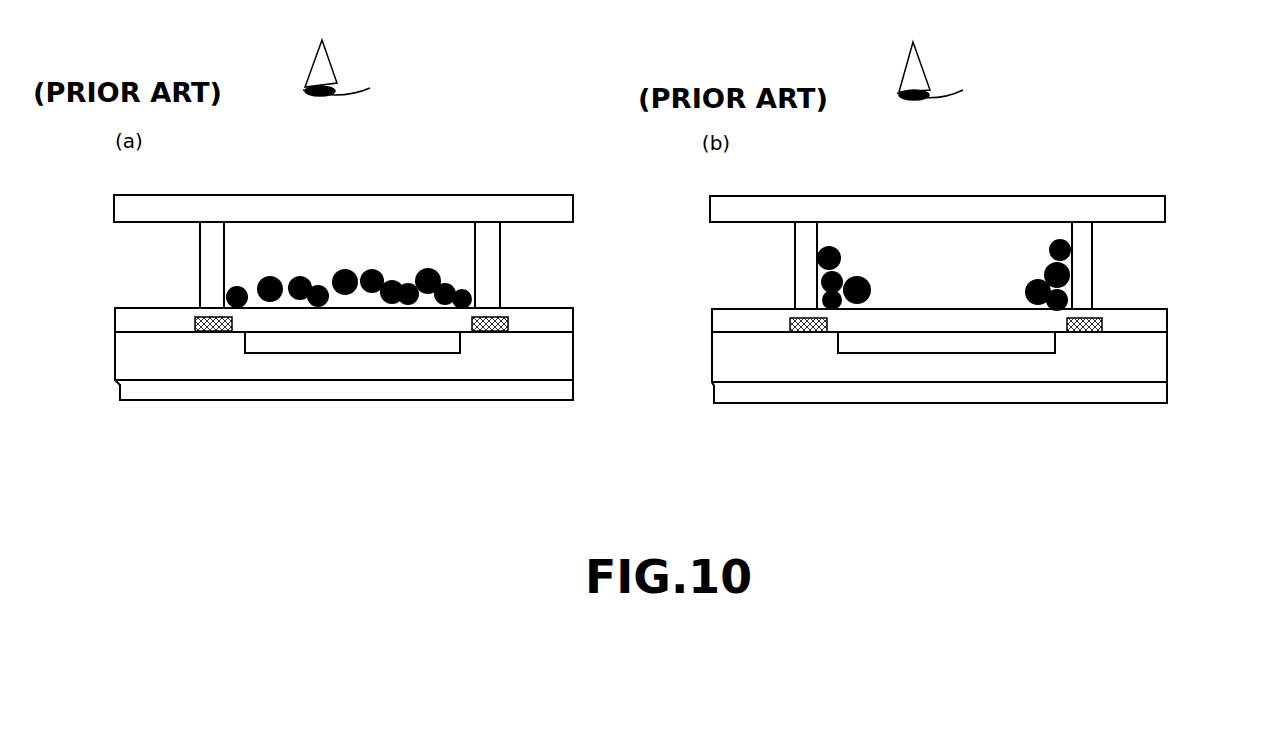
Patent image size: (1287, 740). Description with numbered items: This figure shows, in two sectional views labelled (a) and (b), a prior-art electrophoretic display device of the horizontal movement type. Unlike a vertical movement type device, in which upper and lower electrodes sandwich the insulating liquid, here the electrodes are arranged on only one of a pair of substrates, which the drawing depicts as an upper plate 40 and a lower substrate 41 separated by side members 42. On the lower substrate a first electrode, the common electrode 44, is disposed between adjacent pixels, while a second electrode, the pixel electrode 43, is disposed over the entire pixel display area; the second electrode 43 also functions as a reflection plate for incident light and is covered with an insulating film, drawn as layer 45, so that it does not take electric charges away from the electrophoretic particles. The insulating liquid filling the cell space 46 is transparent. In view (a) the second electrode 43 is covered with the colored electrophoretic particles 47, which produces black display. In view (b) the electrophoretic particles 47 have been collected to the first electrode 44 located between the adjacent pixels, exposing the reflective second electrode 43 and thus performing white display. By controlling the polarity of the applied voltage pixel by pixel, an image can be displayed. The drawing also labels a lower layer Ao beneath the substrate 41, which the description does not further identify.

The counter substrate (top plate) 40 is at (526, 196).
The substrate 41 is at (562, 360).
The spacer / partition wall 42 is at (501, 262).
The second electrode 43 is at (355, 347).
The first electrode 44 is at (217, 333).
The insulating layer 45 is at (566, 312).
The cell gap space 46 is at (417, 254).
The electrophoretic particles 47 is at (322, 285).
The support layer Ao is at (560, 398).